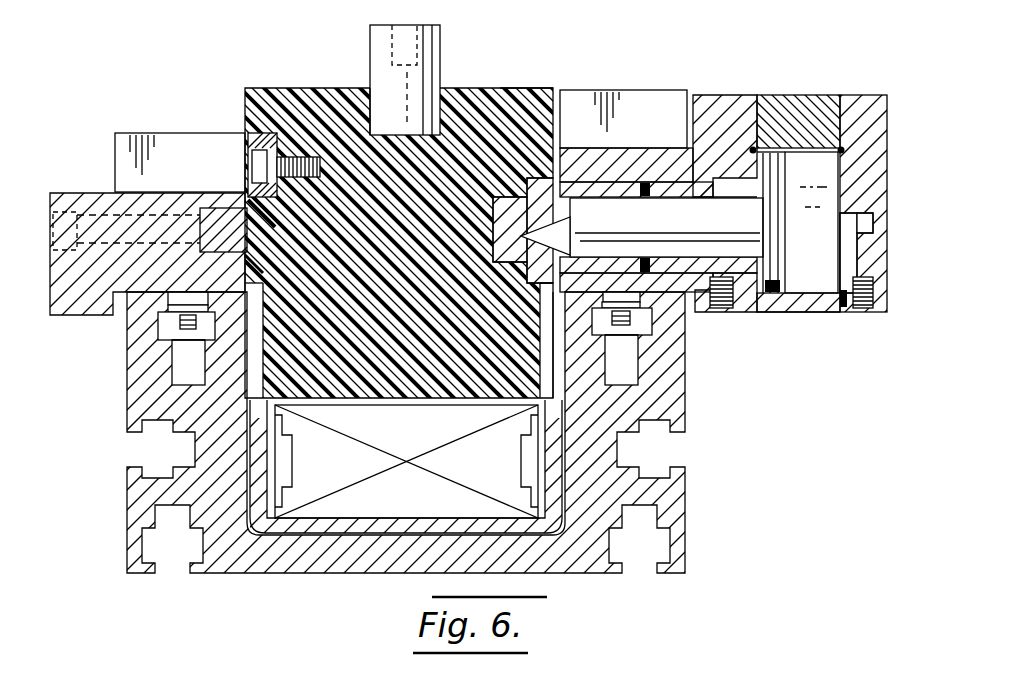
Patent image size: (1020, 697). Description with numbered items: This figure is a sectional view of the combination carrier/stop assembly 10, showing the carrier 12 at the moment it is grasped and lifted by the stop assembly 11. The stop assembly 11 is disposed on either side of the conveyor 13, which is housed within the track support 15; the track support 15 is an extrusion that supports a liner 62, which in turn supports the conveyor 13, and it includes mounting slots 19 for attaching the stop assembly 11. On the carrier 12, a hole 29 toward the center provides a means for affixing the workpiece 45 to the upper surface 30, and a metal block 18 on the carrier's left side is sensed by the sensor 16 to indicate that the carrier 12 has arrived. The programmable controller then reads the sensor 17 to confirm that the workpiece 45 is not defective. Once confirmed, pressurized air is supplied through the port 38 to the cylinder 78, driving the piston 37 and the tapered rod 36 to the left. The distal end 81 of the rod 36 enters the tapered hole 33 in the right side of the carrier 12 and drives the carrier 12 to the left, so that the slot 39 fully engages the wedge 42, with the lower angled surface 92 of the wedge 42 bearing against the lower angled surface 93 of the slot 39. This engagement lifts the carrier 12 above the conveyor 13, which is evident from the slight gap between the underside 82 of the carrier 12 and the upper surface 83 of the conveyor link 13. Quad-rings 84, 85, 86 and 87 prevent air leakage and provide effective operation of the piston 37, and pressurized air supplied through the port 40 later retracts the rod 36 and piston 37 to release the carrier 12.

The combination carrier/stop assembly 10 is at (665, 46).
The stop assembly 11 is at (88, 185).
The carrier 12 is at (297, 80).
The conveyor 13 is at (427, 503).
The track support 15 is at (266, 586).
The sensor 16 is at (145, 133).
The sensor 17 is at (598, 88).
The metal block 18 is at (248, 133).
The mounting slots 19 is at (182, 367).
The hole 29 is at (392, 133).
The upper surface 30 is at (523, 87).
The tapered hole 33 is at (560, 230).
The tapered rod 36 is at (727, 207).
The piston 37 is at (787, 237).
The port 38 is at (865, 312).
The slot 39 is at (245, 197).
The port 40 is at (723, 308).
The wedge 42 is at (184, 200).
The workpiece 45 is at (443, 40).
The liner 62 is at (353, 527).
The cylinder 78 is at (808, 282).
The distal end 81 is at (596, 148).
The underside 82 is at (348, 400).
The upper surface 83 is at (470, 398).
The quad-ring 84 is at (642, 182).
The quad-ring 85 is at (750, 147).
The quad-ring 86 is at (775, 312).
The quad-ring 87 is at (843, 308).
The lower angled surface 92 is at (257, 253).
The lower angled surface 93 is at (278, 214).